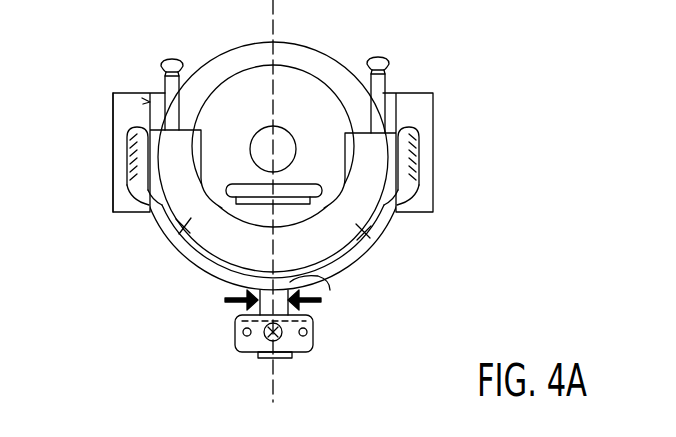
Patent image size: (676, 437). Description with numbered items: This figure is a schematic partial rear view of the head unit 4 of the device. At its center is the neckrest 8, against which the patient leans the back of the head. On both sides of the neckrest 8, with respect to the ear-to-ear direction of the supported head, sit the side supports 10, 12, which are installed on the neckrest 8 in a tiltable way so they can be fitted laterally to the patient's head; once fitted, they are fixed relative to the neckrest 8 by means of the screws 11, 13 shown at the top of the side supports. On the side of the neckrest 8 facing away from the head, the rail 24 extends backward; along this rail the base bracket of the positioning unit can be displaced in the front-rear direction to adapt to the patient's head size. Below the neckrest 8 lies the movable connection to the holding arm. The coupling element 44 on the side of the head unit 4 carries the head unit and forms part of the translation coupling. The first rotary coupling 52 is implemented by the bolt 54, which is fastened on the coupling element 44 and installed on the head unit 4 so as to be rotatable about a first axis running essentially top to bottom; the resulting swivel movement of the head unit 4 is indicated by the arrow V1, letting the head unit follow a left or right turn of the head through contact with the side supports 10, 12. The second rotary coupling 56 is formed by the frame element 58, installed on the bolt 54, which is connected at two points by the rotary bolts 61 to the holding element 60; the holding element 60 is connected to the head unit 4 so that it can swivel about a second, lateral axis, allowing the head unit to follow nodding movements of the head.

The head unit 4 is at (466, 65).
The neckrest 8 is at (315, 62).
The side support 10 is at (128, 103).
The screw 11 is at (170, 58).
The side support 12 is at (420, 100).
The screw 13 is at (380, 54).
The rail 24 is at (230, 207).
The coupling element on the side of the head unit 44 is at (255, 350).
The first rotary coupling 52 is at (221, 325).
The bolt 54 is at (293, 285).
The second rotary coupling 56 is at (104, 140).
The frame element 58 is at (397, 220).
The holding element 60 is at (360, 243).
The rotary bolt 61 is at (140, 207).
The arrow V1 is at (302, 336).